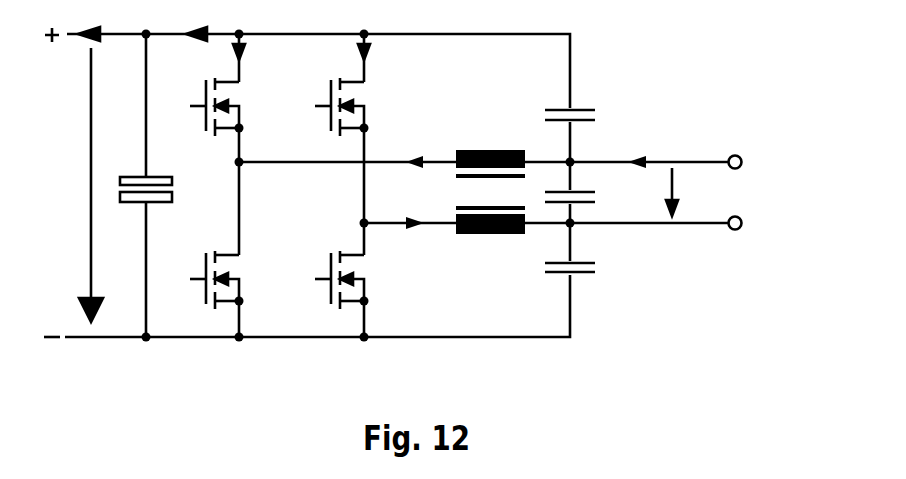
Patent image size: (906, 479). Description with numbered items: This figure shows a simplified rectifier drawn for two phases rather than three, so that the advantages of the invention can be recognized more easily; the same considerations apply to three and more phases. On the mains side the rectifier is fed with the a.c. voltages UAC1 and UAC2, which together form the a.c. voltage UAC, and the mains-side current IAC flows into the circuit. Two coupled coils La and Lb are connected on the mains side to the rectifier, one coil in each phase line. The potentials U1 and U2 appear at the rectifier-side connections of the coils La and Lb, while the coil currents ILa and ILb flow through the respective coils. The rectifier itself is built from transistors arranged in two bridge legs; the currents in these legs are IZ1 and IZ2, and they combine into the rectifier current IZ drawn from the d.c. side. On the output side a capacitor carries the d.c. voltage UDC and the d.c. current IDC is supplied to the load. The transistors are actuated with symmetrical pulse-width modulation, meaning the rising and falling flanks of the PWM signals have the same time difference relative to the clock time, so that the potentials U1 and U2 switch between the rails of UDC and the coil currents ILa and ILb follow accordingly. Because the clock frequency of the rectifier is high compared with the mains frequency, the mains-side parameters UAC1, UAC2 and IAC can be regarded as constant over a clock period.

The DC link current IDC is at (104, 184).
The d.c. voltage UDC is at (108, 185).
The inverter input current IZ is at (142, 52).
The first bridge leg current IZ1 is at (254, 61).
The second bridge leg current IZ2 is at (379, 60).
The potential U1 is at (224, 165).
The potential U2 is at (350, 227).
The coil current ILa is at (414, 146).
The coil current ILb is at (417, 207).
The coil La is at (490, 147).
The coil Lb is at (490, 240).
The mains-side current IAC is at (631, 146).
The a.c. voltage UAC is at (693, 192).
The a.c. voltage UAC1 is at (765, 163).
The a.c. voltage UAC2 is at (765, 225).